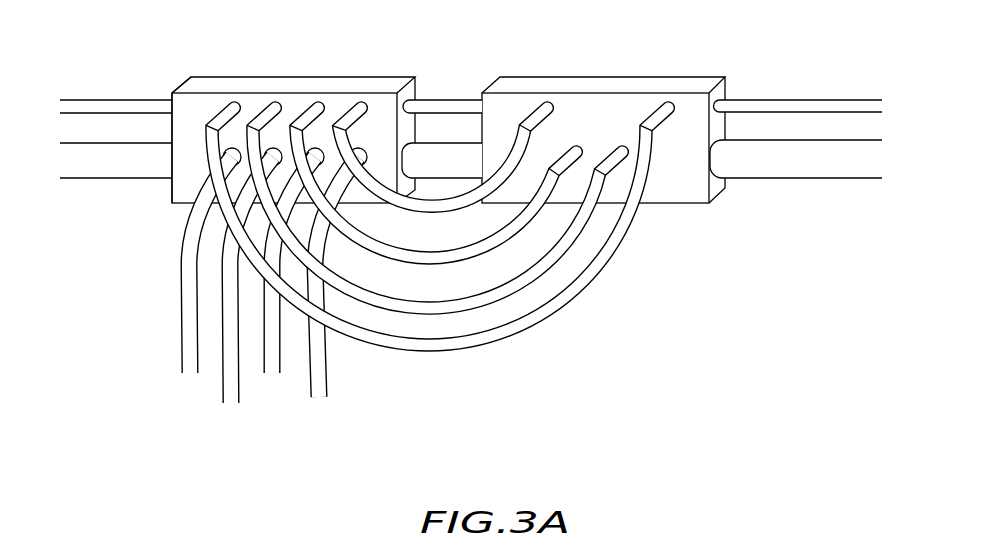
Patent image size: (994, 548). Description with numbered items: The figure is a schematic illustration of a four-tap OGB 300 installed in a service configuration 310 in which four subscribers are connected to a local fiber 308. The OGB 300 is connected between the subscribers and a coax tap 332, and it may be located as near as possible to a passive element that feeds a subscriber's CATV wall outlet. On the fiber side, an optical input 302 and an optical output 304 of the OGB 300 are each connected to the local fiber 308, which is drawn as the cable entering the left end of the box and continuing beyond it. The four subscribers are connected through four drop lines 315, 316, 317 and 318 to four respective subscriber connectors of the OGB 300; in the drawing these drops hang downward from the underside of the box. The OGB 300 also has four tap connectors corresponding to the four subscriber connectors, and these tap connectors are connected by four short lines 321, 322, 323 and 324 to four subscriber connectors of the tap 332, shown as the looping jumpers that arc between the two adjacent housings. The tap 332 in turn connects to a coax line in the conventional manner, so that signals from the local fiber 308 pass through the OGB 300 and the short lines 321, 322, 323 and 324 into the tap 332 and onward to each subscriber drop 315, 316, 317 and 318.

The OGB 300 is at (283, 87).
The optical input 302 is at (172, 93).
The optical output 304 is at (437, 97).
The local fiber 308 is at (87, 106).
The service configuration 310 is at (117, 178).
The drop line 315 is at (187, 243).
The drop line 316 is at (224, 282).
The drop line 317 is at (262, 332).
The drop line 318 is at (327, 363).
The short line 321 is at (496, 340).
The short line 322 is at (488, 307).
The short line 323 is at (382, 268).
The short line 324 is at (394, 212).
The coax tap 332 is at (597, 83).